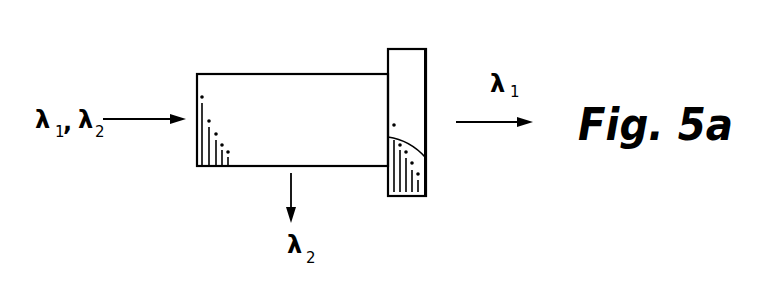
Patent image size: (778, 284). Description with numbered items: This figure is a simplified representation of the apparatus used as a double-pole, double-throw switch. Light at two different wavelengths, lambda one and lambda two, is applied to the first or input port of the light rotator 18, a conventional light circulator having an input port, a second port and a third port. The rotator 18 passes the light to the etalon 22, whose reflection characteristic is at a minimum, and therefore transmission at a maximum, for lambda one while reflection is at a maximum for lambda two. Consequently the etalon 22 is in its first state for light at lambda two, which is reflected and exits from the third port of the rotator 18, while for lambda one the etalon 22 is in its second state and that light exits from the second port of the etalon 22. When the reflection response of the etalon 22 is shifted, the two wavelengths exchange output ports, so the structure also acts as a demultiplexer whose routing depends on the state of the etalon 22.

The light rotator 18 is at (296, 74).
The etalon 22 is at (424, 49).